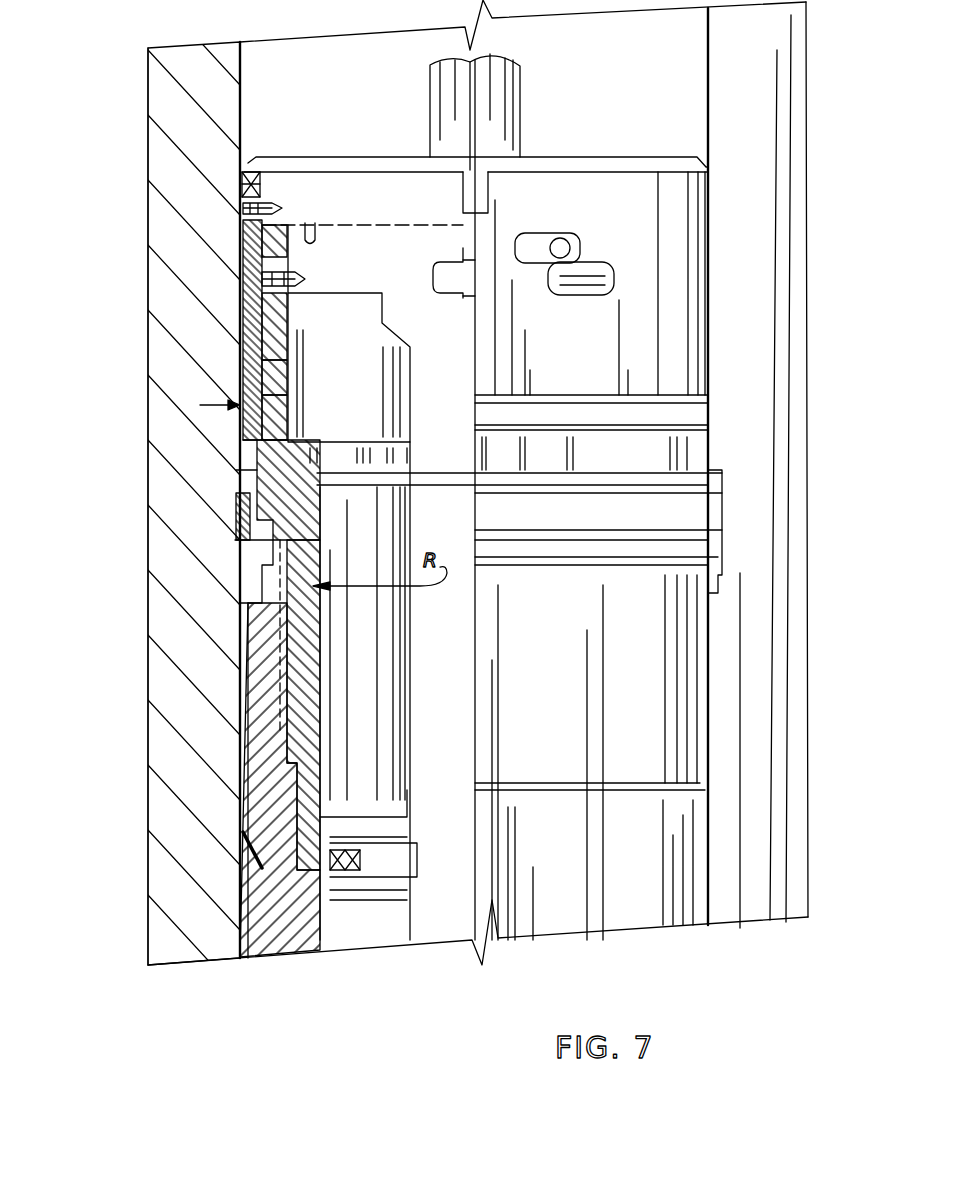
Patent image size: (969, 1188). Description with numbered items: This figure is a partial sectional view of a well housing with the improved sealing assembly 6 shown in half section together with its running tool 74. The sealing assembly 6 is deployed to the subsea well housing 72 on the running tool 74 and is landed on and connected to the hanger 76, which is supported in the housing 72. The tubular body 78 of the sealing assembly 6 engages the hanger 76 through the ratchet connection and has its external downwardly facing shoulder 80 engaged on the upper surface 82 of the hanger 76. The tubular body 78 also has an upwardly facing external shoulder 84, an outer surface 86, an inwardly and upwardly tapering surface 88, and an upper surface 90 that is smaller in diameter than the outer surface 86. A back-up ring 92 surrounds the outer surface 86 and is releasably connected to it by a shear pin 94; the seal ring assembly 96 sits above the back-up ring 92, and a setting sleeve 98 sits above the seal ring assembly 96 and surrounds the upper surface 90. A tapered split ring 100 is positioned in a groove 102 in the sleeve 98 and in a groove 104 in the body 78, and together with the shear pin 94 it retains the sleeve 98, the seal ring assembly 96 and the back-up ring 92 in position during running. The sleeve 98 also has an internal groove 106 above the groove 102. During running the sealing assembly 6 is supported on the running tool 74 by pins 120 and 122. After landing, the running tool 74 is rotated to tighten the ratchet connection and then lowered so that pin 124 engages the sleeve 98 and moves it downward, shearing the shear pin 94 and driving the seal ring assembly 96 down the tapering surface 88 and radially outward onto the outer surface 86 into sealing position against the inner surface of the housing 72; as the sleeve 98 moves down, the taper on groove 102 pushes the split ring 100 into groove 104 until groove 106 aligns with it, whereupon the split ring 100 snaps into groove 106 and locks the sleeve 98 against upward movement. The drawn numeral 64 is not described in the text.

The sealing assembly 6 is at (200, 405).
The seal ring 64 is at (262, 423).
The well housing 72 is at (148, 613).
The running tool 74 is at (430, 97).
The hanger 76 is at (250, 815).
The tubular body 78 is at (333, 670).
The external downwardly facing shoulder 80 is at (243, 543).
The upper surface 82 is at (390, 533).
The upwardly facing external shoulder 84 is at (257, 470).
The outer surface 86 is at (250, 470).
The inwardly and upwardly tapering surface 88 is at (250, 339).
The upper surface 90 is at (262, 272).
The back-up ring 92 is at (262, 447).
The shear pin 94 is at (250, 467).
The seal ring assembly 96 is at (283, 396).
The setting sleeve 98 is at (250, 205).
The tapered split ring 100 is at (250, 294).
The groove 102 is at (283, 396).
The groove 104 is at (265, 315).
The internal groove 106 is at (465, 298).
The pin 120 is at (245, 875).
The pin 122 is at (250, 237).
The pin 124 is at (148, 92).